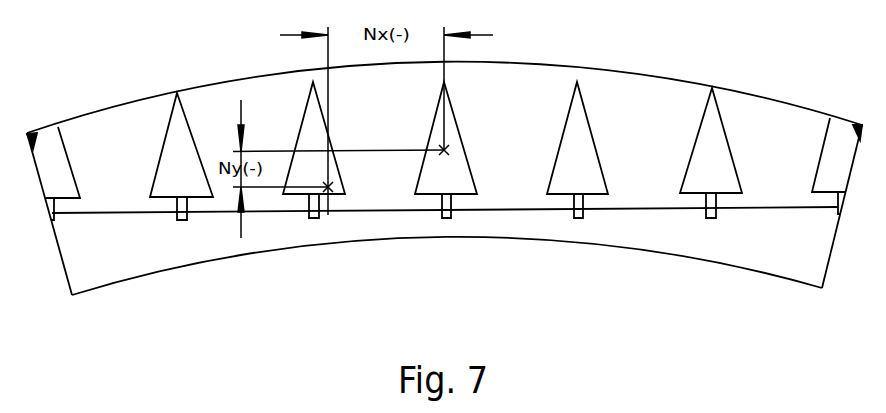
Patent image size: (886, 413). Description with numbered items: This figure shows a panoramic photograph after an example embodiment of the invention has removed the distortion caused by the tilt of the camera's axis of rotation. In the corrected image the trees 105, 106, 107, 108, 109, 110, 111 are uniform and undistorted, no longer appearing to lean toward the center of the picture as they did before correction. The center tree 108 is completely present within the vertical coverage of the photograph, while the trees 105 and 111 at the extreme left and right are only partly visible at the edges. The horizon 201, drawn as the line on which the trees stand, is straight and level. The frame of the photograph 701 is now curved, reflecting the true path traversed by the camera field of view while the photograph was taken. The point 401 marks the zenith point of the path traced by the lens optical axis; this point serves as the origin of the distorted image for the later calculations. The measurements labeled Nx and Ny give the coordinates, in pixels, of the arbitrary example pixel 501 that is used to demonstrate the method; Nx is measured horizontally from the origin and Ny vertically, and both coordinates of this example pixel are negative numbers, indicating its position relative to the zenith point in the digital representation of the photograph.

The tree 105 is at (62, 190).
The tree 106 is at (182, 103).
The tree 107 is at (317, 116).
The center tree 108 is at (450, 117).
The tree 109 is at (587, 153).
The tree 110 is at (708, 100).
The tree 111 is at (832, 167).
The horizon 201 is at (387, 212).
The zenith point 401 is at (444, 150).
The example pixel 501 is at (326, 189).
The frame of the photograph 701 is at (540, 64).